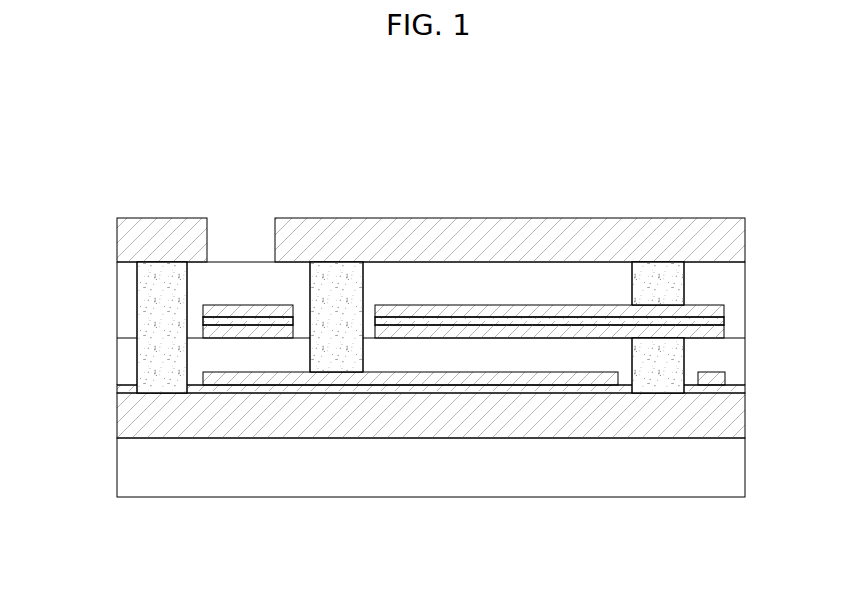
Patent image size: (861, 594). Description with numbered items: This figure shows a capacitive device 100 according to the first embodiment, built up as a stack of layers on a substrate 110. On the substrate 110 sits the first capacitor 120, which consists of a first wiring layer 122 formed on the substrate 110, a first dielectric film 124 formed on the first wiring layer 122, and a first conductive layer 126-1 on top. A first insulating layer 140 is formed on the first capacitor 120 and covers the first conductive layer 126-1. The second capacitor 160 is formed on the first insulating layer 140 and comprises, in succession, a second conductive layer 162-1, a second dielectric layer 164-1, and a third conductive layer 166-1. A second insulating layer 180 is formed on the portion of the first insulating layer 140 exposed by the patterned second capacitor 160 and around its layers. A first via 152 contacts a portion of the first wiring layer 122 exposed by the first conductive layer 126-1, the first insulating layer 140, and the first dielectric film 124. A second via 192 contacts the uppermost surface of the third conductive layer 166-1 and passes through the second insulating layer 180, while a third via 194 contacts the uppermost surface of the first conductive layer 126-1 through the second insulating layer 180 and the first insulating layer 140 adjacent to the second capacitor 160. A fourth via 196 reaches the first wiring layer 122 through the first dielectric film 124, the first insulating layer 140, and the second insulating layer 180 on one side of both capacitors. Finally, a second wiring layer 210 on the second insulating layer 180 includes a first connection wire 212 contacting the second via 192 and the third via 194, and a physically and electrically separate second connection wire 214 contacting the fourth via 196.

The capacitive device 100 is at (657, 211).
The substrate 110 is at (742, 467).
The first capacitor 120 is at (381, 398).
The first wiring layer 122 is at (120, 413).
The first dielectric film 124 is at (118, 389).
The first conductive layer 126-1 is at (203, 378).
The first insulating layer 140 is at (740, 362).
The first via 152 is at (660, 380).
The second capacitor 160 is at (617, 312).
The second conductive layer 162-1 is at (724, 334).
The second dielectric layer 164-1 is at (724, 321).
The third conductive layer 166-1 is at (724, 308).
The second insulating layer 180 is at (740, 270).
The second via 192 is at (660, 273).
The third via 194 is at (343, 358).
The fourth via 196 is at (164, 382).
The second wiring layer 210 is at (431, 194).
The first connection wire 212 is at (510, 214).
The second connection wire 214 is at (162, 230).